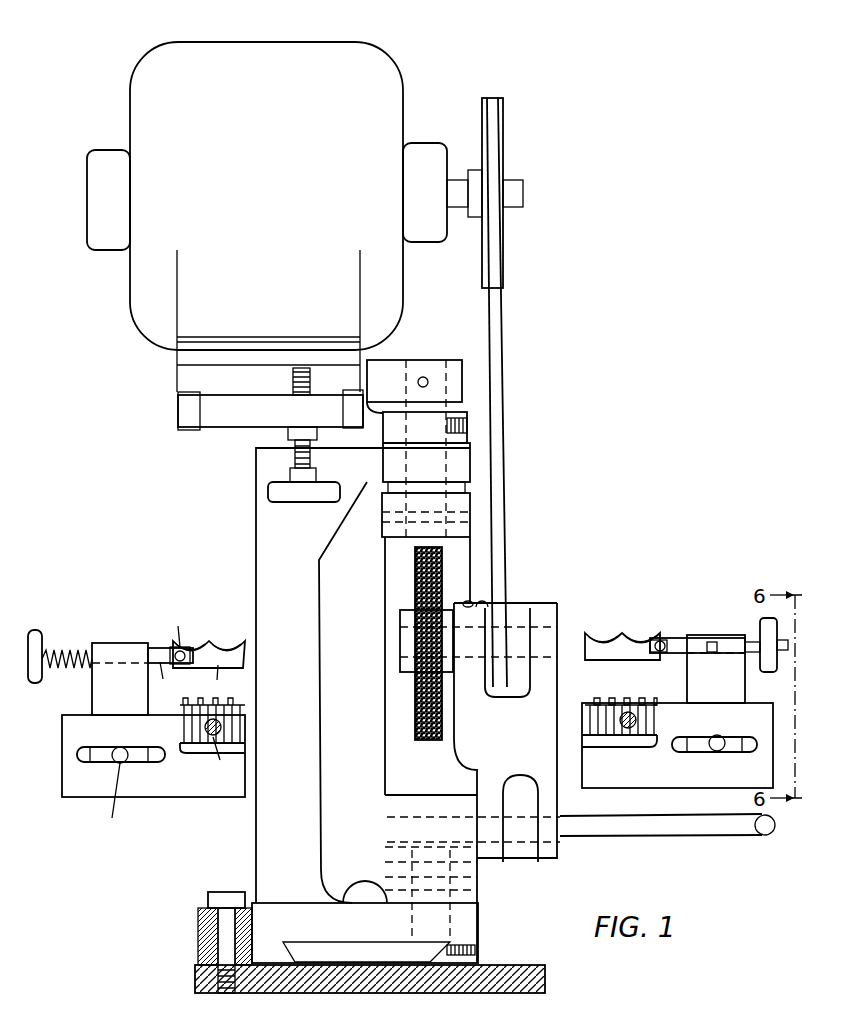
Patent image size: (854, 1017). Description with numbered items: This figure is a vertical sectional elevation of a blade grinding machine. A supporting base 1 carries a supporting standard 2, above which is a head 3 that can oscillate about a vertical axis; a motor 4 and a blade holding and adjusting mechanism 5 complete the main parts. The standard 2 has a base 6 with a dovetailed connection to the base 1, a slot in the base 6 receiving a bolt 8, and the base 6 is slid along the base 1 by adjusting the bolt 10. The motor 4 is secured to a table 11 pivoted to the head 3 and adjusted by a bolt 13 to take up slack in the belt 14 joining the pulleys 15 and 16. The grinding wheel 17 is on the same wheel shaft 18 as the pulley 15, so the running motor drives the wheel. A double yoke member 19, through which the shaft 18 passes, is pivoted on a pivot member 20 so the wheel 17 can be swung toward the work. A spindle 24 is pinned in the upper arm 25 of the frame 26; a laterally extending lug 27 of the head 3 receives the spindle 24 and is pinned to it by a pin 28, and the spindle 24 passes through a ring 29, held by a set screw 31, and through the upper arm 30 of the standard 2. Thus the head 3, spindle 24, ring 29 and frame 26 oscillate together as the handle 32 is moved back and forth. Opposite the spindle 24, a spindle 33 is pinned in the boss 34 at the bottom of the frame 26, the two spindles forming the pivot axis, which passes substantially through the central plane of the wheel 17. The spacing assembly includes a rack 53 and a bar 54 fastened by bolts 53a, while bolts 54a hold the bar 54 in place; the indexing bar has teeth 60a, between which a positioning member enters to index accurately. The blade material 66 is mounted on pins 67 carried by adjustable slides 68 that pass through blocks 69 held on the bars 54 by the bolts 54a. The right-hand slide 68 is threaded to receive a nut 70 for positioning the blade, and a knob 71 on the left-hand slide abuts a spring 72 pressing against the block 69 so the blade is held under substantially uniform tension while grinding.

The supporting base 1 is at (497, 964).
The supporting standard 2 is at (307, 789).
The head 3 is at (360, 348).
The motor 4 is at (267, 217).
The blade holding and adjusting mechanism 5 is at (624, 701).
The base of the standard 6 is at (467, 925).
The bolt 8 is at (230, 890).
The adjusting bolt 10 is at (363, 886).
The table 11 is at (187, 358).
The bolt 13 is at (313, 460).
The belt 14 is at (498, 470).
The belt pulley 15 is at (508, 600).
The belt pulley 16 is at (505, 246).
The grinding wheel 17 is at (425, 740).
The wheel shaft 18 is at (550, 642).
The double yoke member 19 is at (545, 695).
The pivot member 20 is at (517, 833).
The spindle 24 is at (417, 410).
The upper arm of the frame 25 is at (463, 502).
The frame 26 is at (393, 578).
The laterally extending lug 27 is at (452, 362).
The pin 28 is at (423, 376).
The ring 29 is at (467, 415).
The upper arm of the standard 30 is at (472, 456).
The set screw 31 is at (467, 426).
The handle 32 is at (733, 827).
The spindle 33 is at (427, 927).
The boss 34 is at (463, 895).
The rack 53 is at (655, 717).
The bolts 53a is at (628, 729).
The bar 54 is at (657, 777).
The bolts 54a is at (717, 751).
The teeth 60a is at (627, 698).
The blade material 66 is at (622, 652).
The pins 67 is at (667, 638).
The adjustable slides 68 is at (675, 641).
The blocks 69 is at (716, 669).
The nut 70 is at (771, 663).
The knob 71 is at (35, 630).
The spring 72 is at (68, 647).